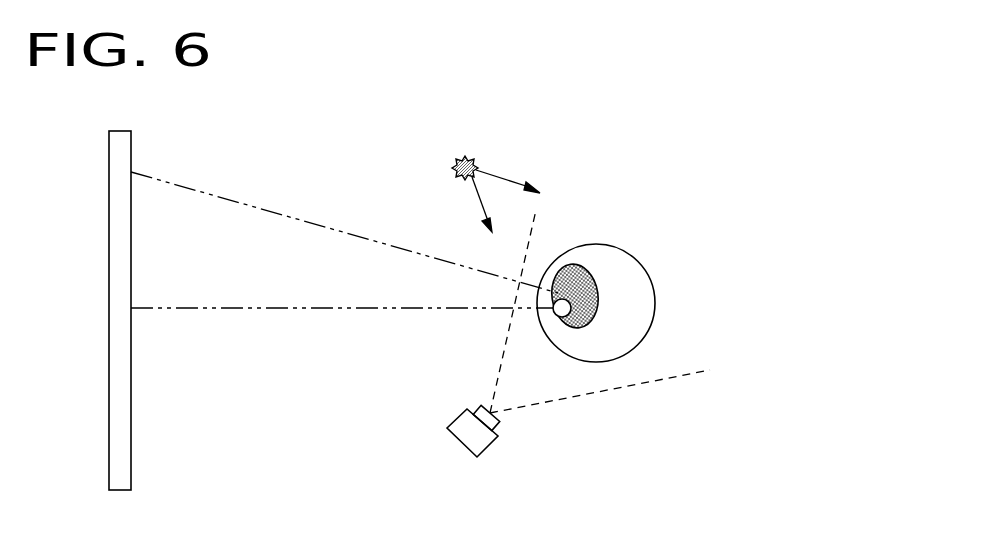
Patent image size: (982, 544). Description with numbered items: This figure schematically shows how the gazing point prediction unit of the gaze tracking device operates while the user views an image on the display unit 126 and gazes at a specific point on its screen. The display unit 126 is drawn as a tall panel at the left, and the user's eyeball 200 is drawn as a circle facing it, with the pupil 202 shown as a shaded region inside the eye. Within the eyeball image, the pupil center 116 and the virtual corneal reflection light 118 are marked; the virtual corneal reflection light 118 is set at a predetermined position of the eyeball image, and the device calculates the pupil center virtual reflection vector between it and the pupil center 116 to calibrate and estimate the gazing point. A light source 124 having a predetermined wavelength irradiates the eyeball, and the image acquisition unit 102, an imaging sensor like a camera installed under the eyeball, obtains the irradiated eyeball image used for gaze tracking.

The image acquisition unit 102 is at (465, 448).
The pupil center 116 is at (556, 291).
The virtual corneal reflection light 118 is at (571, 306).
The light source 124 is at (455, 166).
The display unit 126 is at (109, 353).
The eye 200 is at (654, 283).
The pupil 202 is at (587, 266).